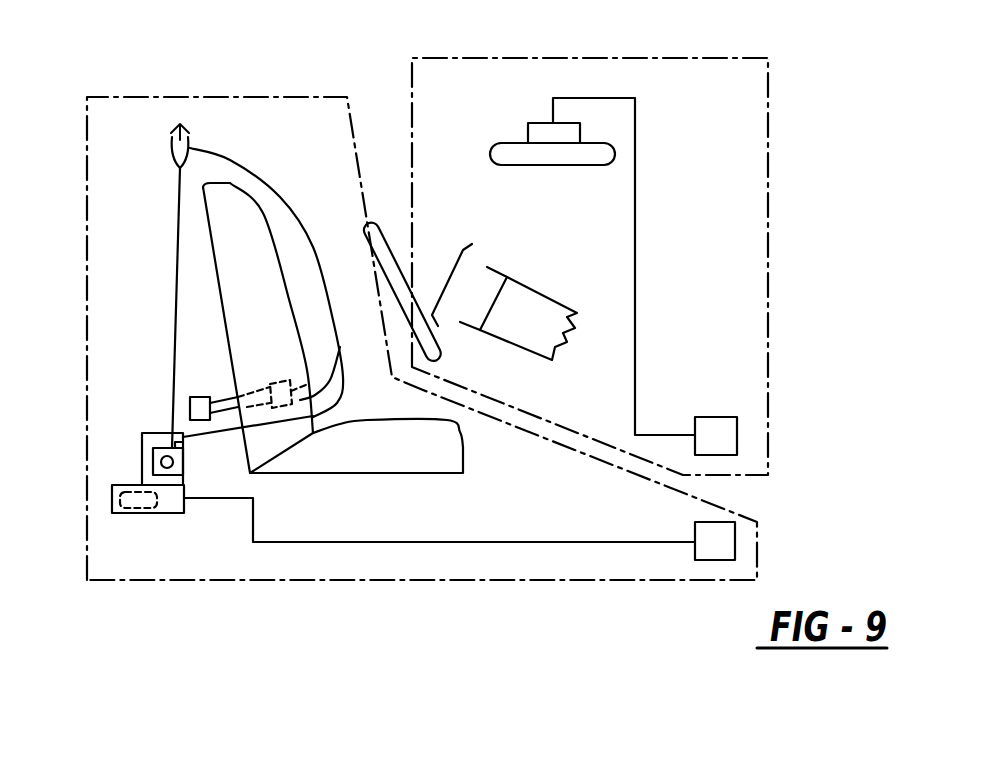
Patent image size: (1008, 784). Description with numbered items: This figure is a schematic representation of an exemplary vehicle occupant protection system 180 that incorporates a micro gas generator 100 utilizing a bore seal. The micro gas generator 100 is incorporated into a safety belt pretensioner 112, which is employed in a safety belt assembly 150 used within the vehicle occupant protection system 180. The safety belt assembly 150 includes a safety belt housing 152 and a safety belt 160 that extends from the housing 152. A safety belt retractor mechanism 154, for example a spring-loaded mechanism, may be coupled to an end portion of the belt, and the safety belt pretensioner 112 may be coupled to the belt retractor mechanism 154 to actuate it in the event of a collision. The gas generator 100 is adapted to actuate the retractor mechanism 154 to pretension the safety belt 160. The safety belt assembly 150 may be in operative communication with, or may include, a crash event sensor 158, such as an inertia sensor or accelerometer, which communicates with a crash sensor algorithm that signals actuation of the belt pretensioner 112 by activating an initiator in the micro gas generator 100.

The micro gas generator 100 is at (137, 498).
The safety belt pretensioner 112 is at (173, 500).
The safety belt assembly 150 is at (373, 582).
The safety belt housing 152 is at (152, 460).
The safety belt retractor mechanism 154 is at (147, 433).
The crash event sensor 158 is at (714, 561).
The safety belt 160 is at (230, 163).
The vehicle occupant protection system 180 is at (325, 60).